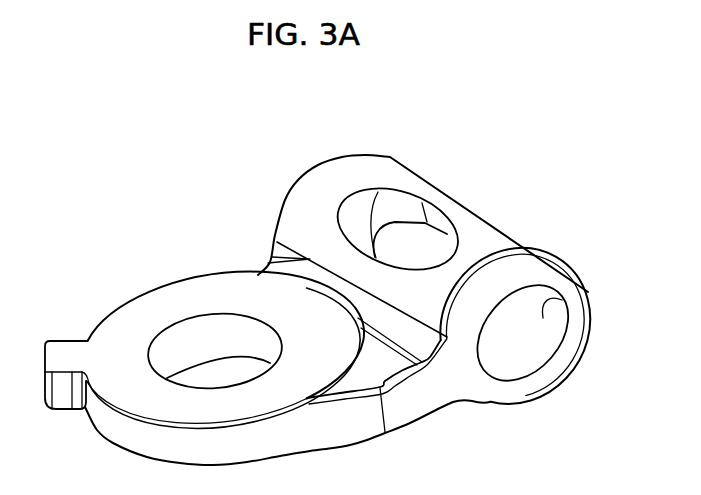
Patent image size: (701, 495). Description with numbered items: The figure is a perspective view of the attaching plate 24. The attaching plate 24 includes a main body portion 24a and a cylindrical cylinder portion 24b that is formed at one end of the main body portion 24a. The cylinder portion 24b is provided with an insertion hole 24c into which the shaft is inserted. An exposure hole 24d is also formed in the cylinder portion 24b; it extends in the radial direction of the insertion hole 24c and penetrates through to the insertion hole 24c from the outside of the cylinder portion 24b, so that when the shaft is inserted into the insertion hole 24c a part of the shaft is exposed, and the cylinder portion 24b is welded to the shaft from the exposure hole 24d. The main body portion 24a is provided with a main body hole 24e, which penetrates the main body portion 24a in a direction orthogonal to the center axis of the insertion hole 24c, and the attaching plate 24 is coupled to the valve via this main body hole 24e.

The attaching plate 24 is at (203, 185).
The main body portion 24a is at (120, 310).
The cylinder portion 24b is at (353, 181).
The insertion hole 24c is at (543, 318).
The exposure hole 24d is at (404, 201).
The main body hole 24e is at (213, 321).